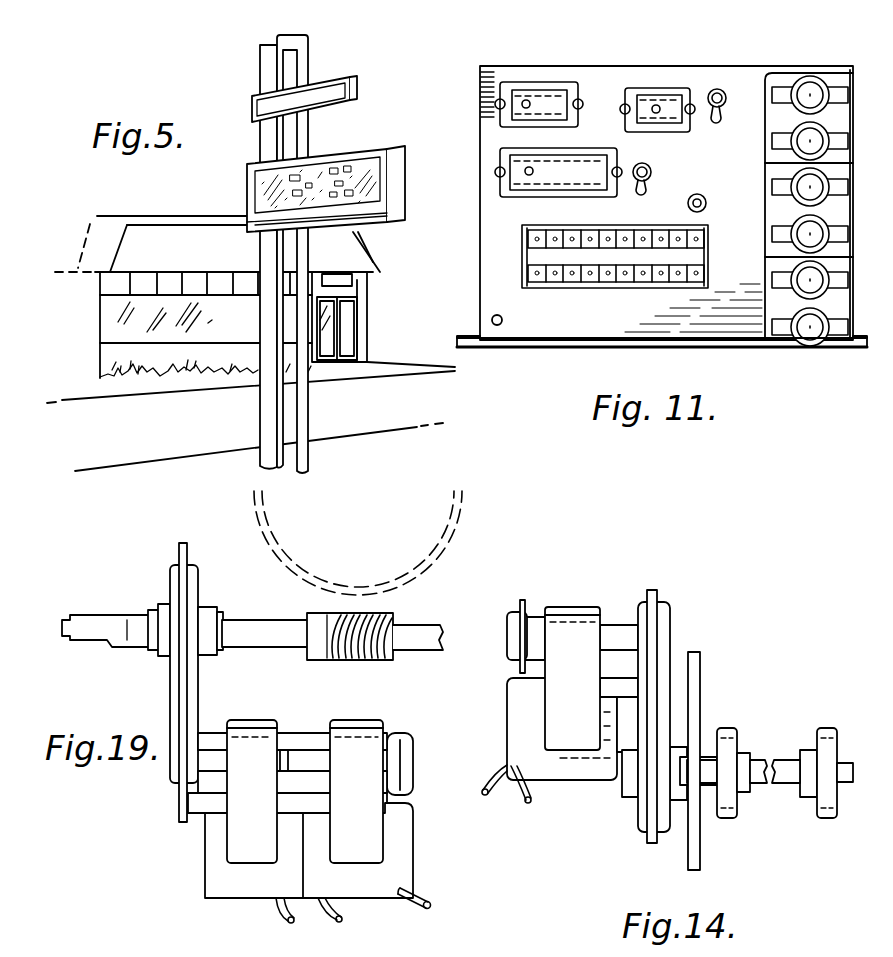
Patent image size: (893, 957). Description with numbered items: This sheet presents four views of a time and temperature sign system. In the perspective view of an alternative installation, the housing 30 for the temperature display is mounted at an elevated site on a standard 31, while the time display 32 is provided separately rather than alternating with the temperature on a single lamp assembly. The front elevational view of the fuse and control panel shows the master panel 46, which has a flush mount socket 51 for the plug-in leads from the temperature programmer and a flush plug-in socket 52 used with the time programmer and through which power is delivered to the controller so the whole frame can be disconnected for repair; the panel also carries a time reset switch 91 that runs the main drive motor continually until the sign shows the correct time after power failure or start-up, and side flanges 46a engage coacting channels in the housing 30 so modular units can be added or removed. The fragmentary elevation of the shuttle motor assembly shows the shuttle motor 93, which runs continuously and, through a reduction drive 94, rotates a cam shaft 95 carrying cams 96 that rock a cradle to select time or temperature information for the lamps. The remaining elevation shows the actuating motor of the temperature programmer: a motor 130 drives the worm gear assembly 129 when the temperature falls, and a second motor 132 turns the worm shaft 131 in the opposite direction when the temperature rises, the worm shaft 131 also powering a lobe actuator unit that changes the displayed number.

In FIG. 5, the housing 30 is at (391, 145).
In FIG. 5, the standard 31 is at (307, 58).
In FIG. 5, the time display 32 is at (373, 273).
In FIG. 11, the master panel 46 is at (562, 345).
In FIG. 11, the side flanges 46a is at (858, 351).
In FIG. 11, the flush mount socket 51 is at (507, 82).
In FIG. 11, the flush plug-in socket 52 is at (500, 176).
In FIG. 11, the time reset switch 91 is at (650, 196).
In FIG. 14, the shuttle motor 93 is at (578, 605).
In FIG. 14, the reduction drive 94 is at (645, 830).
In FIG. 14, the cam shaft 95 is at (765, 758).
In FIG. 14, the cams 96 is at (729, 820).
In FIG. 19, the worm gear assembly 129 is at (396, 660).
In FIG. 19, the motor 130 is at (257, 718).
In FIG. 19, the worm shaft 131 is at (85, 616).
In FIG. 19, the second motor 132 is at (355, 720).